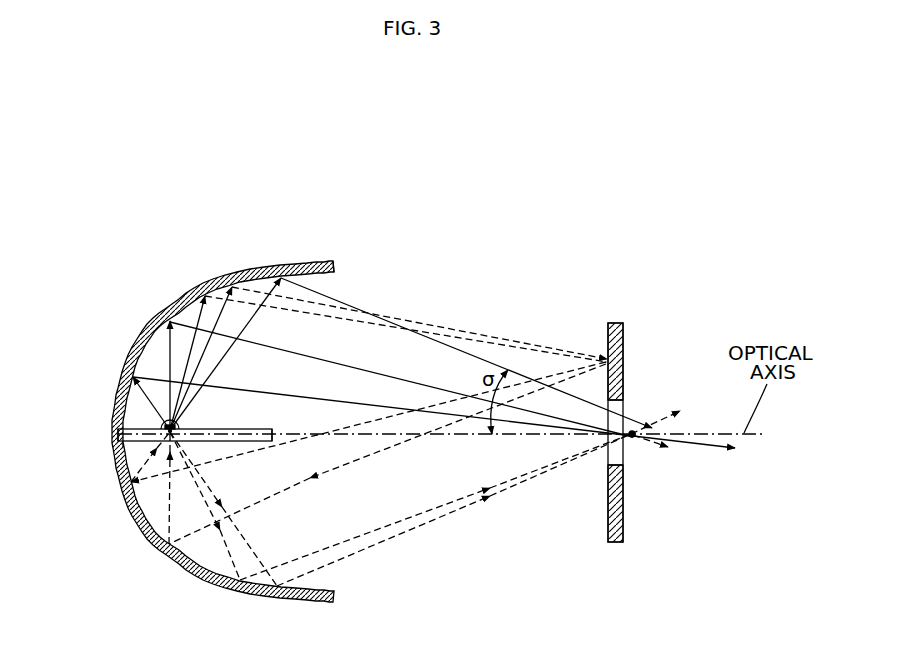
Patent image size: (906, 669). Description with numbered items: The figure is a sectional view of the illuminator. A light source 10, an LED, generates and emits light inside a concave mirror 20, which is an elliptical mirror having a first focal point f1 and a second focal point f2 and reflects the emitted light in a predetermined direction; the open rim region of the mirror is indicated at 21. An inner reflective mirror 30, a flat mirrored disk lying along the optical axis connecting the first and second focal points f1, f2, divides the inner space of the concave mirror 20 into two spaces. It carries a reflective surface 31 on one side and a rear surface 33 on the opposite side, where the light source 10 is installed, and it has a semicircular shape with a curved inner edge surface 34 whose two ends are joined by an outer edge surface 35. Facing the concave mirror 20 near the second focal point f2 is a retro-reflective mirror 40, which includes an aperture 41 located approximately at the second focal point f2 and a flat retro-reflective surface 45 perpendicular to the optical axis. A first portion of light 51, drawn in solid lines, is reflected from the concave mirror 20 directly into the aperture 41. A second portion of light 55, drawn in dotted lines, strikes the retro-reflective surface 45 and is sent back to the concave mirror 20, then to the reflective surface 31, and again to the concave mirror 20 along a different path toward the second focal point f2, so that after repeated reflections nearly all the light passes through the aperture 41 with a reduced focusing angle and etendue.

The light source 10 is at (142, 415).
The concave mirror 20 is at (136, 325).
The reflector open end 21 is at (337, 270).
The inner reflective mirror 30 is at (122, 462).
The reflective surface 31 is at (123, 486).
The rear surface 33 is at (204, 424).
The curved inner edge surface 34 is at (231, 442).
The outer edge surface 35 is at (278, 440).
The retro-reflective mirror 40 is at (627, 416).
The aperture 41 is at (620, 462).
The retro-reflective surface 45 is at (607, 516).
The first portion of light 51 is at (477, 350).
The second portion of light 55 is at (571, 354).
The first focal point f1 is at (118, 431).
The second focal point f2 is at (636, 437).